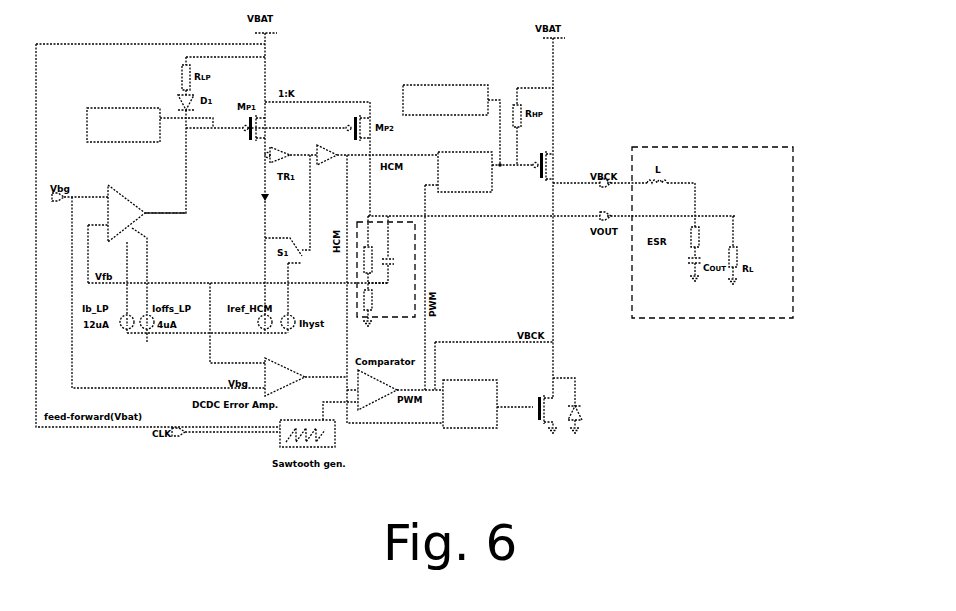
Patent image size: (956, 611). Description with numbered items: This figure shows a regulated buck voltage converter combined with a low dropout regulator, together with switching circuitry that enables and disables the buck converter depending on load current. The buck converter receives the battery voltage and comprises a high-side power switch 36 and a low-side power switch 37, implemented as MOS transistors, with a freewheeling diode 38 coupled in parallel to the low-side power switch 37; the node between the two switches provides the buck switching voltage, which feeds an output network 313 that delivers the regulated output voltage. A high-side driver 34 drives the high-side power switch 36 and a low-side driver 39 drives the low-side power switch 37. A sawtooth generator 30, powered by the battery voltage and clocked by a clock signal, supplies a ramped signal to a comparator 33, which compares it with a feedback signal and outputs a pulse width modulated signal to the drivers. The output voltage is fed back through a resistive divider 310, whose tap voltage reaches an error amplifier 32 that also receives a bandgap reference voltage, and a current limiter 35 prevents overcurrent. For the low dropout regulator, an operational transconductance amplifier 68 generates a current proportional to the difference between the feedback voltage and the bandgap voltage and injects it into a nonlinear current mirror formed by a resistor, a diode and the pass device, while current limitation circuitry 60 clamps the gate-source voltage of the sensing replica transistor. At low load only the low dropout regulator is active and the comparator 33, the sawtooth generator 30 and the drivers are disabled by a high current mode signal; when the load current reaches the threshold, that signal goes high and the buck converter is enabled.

The current limitation circuitry 60 is at (128, 108).
The operational transconductance amplifier 68 is at (128, 192).
The current limiter 35 is at (428, 82).
The high-side driver 34 is at (467, 190).
The high-side power switch 36 is at (543, 154).
The output filter and load 313 is at (650, 147).
The resistive divider 310 is at (413, 255).
The error amplifier 32 is at (290, 369).
The comparator 33 is at (375, 407).
The sawtooth generator 30 is at (282, 439).
The low-side driver 39 is at (480, 429).
The low-side power switch 37 is at (537, 402).
The freewheeling diode 38 is at (583, 418).